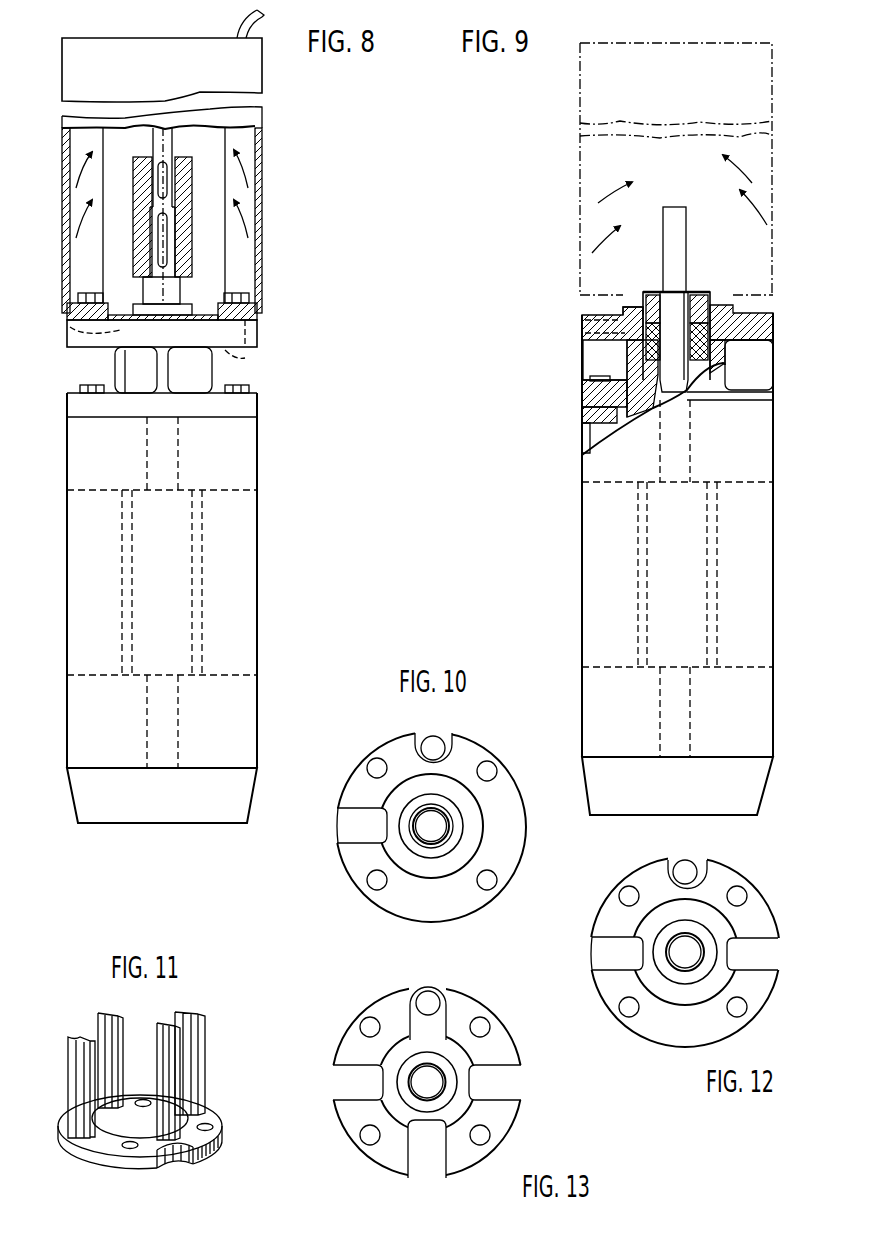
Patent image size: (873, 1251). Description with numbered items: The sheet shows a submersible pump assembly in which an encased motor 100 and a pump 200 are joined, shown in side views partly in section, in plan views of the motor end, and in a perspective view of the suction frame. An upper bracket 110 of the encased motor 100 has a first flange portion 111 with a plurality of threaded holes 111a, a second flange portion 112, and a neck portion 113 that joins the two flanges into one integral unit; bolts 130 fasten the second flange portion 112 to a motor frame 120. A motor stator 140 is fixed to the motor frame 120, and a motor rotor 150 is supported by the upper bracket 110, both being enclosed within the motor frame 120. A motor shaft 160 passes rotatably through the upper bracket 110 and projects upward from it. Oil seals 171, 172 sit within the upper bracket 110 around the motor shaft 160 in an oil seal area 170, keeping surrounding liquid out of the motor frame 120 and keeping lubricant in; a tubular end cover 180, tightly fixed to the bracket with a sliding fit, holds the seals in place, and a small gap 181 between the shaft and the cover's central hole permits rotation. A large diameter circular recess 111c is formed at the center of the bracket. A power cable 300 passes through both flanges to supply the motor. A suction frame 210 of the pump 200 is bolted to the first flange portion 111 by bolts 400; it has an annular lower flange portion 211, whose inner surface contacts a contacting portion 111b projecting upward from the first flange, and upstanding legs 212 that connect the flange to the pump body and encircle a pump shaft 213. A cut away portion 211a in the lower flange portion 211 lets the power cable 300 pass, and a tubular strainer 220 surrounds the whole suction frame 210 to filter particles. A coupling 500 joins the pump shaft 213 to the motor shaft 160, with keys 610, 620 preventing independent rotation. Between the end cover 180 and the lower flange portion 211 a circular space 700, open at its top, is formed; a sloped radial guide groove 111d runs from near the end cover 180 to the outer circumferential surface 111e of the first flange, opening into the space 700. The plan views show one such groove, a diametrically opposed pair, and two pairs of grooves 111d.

In FIG. 8, the encased motor 100 is at (188, 608).
In FIG. 9, the encased motor 100 is at (654, 564).
In FIG. 8, the upper bracket 110 is at (245, 341).
In FIG. 9, the upper bracket 110 is at (750, 318).
In FIG. 10, the upper bracket 110 is at (430, 823).
In FIG. 12, the upper bracket 110 is at (685, 969).
In FIG. 13, the upper bracket 110 is at (448, 1083).
In FIG. 8, the first flange portion 111 is at (245, 331).
In FIG. 9, the first flange portion 111 is at (600, 342).
In FIG. 10, the first flange portion 111 is at (375, 906).
In FIG. 12, the first flange portion 111 is at (678, 1053).
In FIG. 13, the first flange portion 111 is at (509, 1137).
In FIG. 8, the threaded holes 111a is at (235, 356).
In FIG. 10, the threaded holes 111a is at (492, 768).
In FIG. 12, the threaded holes 111a is at (743, 894).
In FIG. 13, the threaded holes 111a is at (371, 1019).
In FIG. 8, the contacting portion 111b is at (163, 370).
In FIG. 9, the contacting portion 111b is at (620, 302).
In FIG. 10, the contacting portion 111b is at (484, 856).
In FIG. 12, the contacting portion 111b is at (726, 1000).
In FIG. 13, the contacting portion 111b is at (456, 1132).
In FIG. 9, the large diameter circular recess 111c is at (654, 418).
In FIG. 8, the radial guide groove 111d is at (110, 331).
In FIG. 9, the radial guide groove 111d is at (600, 324).
In FIG. 10, the radial guide groove 111d is at (352, 831).
In FIG. 12, the radial guide groove 111d is at (618, 960).
In FIG. 13, the radial guide groove 111d is at (347, 1085).
In FIG. 9, the outer circumferential surface 111e is at (592, 335).
In FIG. 10, the outer circumferential surface 111e is at (334, 819).
In FIG. 12, the outer circumferential surface 111e is at (589, 960).
In FIG. 8, the second flange portion 112 is at (250, 407).
In FIG. 9, the second flange portion 112 is at (585, 404).
In FIG. 8, the neck portion 113 is at (135, 375).
In FIG. 9, the neck portion 113 is at (605, 360).
In FIG. 8, the motor frame 120 is at (262, 545).
In FIG. 9, the motor frame 120 is at (585, 442).
In FIG. 8, the bolts 130 is at (80, 390).
In FIG. 8, the motor stator 140 is at (92, 546).
In FIG. 9, the motor stator 140 is at (607, 615).
In FIG. 8, the motor rotor 150 is at (165, 640).
In FIG. 9, the motor rotor 150 is at (690, 607).
In FIG. 8, the motor shaft 160 is at (140, 213).
In FIG. 9, the motor shaft 160 is at (685, 205).
In FIG. 10, the motor shaft 160 is at (440, 833).
In FIG. 12, the motor shaft 160 is at (690, 962).
In FIG. 13, the motor shaft 160 is at (421, 1092).
In FIG. 9, the oil seal area 170 is at (718, 302).
In FIG. 9, the oil seal 171 is at (740, 332).
In FIG. 9, the oil seal 172 is at (745, 362).
In FIG. 8, the tubular end cover 180 is at (188, 302).
In FIG. 9, the tubular end cover 180 is at (650, 292).
In FIG. 10, the tubular end cover 180 is at (456, 817).
In FIG. 12, the tubular end cover 180 is at (705, 942).
In FIG. 13, the tubular end cover 180 is at (401, 1095).
In FIG. 9, the small gap 181 is at (697, 292).
In FIG. 10, the small gap 181 is at (450, 801).
In FIG. 8, the pump 200 is at (262, 118).
In FIG. 8, the suction frame 210 is at (245, 161).
In FIG. 11, the suction frame 210 is at (206, 1038).
In FIG. 8, the annular lower flange portion 211 is at (67, 314).
In FIG. 9, the annular lower flange portion 211 is at (578, 304).
In FIG. 11, the annular lower flange portion 211 is at (155, 1135).
In FIG. 11, the recess or cut away portion 211a is at (180, 1165).
In FIG. 8, the legs 212 is at (80, 152).
In FIG. 11, the legs 212 is at (100, 1028).
In FIG. 8, the pump shaft 213 is at (160, 142).
In FIG. 8, the tubular strainer 220 is at (262, 206).
In FIG. 8, the power cable 300 is at (238, 24).
In FIG. 10, the power cable 300 is at (440, 743).
In FIG. 12, the power cable 300 is at (685, 871).
In FIG. 13, the power cable 300 is at (433, 993).
In FIG. 8, the bolts 400 is at (80, 298).
In FIG. 8, the coupling 500 is at (211, 217).
In FIG. 8, the key 610 is at (170, 179).
In FIG. 8, the key 620 is at (160, 241).
In FIG. 8, the space or recess 700 is at (212, 312).
In FIG. 9, the space or recess 700 is at (757, 273).